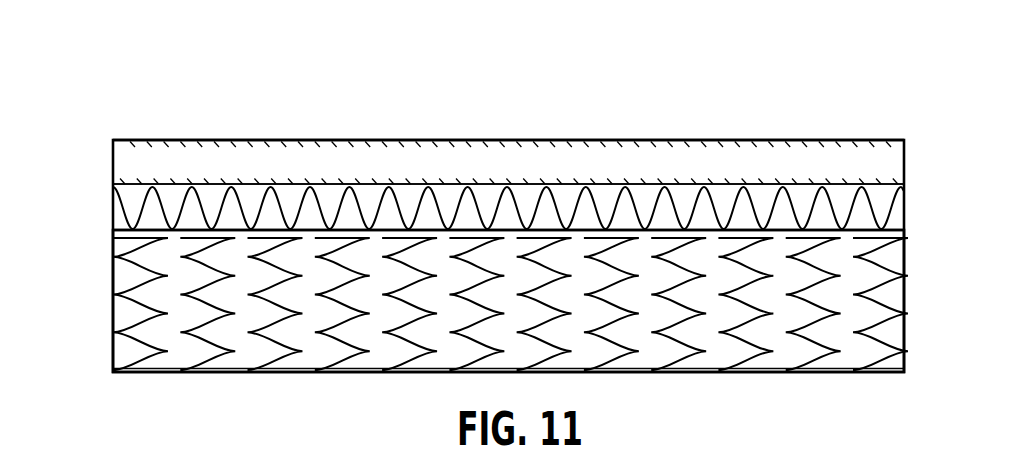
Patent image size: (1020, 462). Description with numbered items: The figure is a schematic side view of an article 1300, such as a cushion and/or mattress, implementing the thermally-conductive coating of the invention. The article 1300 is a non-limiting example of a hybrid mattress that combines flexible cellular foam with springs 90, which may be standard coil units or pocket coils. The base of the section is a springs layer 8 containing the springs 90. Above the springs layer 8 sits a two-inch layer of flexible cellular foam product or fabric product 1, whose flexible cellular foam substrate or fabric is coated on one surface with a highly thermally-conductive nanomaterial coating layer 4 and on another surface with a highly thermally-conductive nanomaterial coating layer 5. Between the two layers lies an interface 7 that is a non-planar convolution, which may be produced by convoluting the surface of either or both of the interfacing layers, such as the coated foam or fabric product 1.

The article 1300 is at (128, 66).
The flexible cellular foam product or fabric product 1 is at (905, 163).
The highly thermally-conductive nanomaterial coating layer 4 is at (113, 142).
The highly thermally-conductive nanomaterial coating layer 5 is at (113, 184).
The interface 7 is at (905, 213).
The springs layer 8 is at (905, 303).
The springs 90 is at (127, 303).